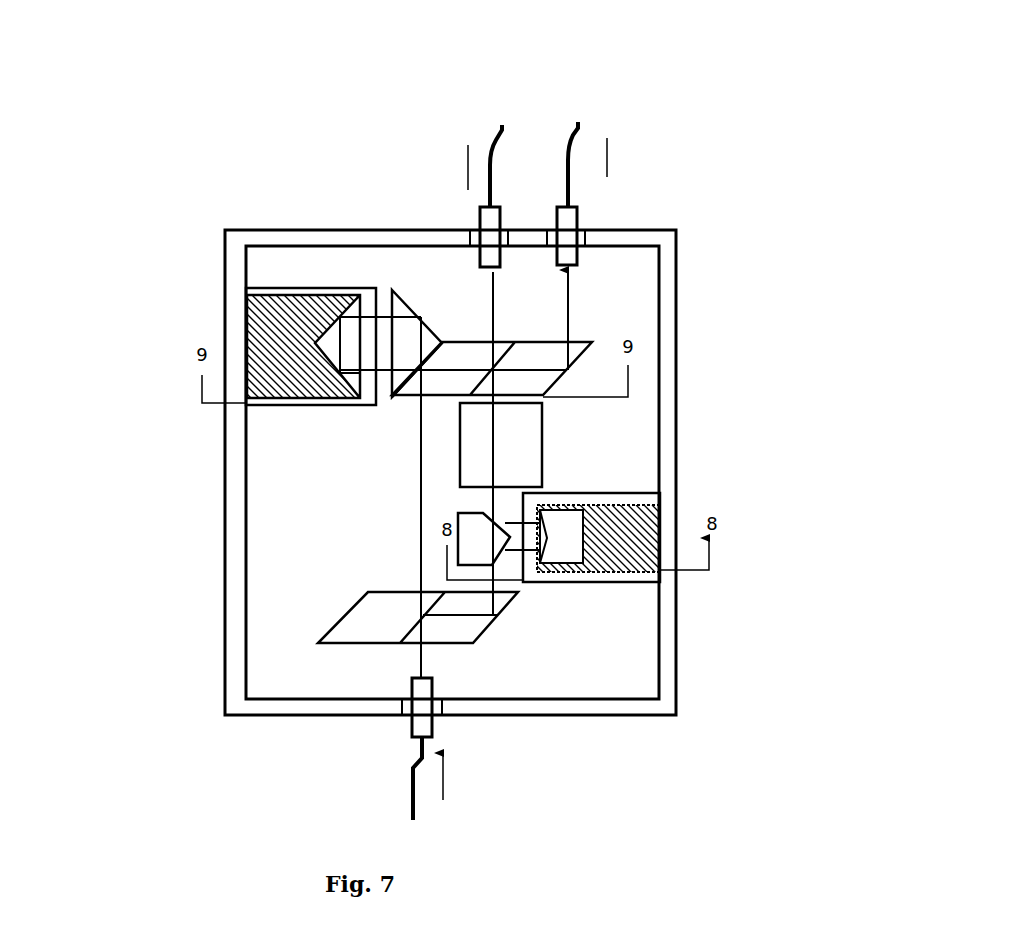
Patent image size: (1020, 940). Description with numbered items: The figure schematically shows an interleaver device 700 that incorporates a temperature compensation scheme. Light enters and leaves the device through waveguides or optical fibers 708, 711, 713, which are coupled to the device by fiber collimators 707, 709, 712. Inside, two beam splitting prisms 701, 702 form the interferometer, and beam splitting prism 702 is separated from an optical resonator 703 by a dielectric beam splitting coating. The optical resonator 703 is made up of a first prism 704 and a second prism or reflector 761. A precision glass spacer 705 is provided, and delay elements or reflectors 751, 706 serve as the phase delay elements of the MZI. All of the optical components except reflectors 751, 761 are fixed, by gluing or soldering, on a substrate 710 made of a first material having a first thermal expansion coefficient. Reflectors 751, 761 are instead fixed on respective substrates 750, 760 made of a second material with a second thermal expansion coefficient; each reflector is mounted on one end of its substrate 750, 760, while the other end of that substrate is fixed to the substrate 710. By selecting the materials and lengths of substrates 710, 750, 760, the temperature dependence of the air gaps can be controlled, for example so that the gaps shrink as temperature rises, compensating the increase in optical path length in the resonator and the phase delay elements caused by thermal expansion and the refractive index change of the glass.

The device 700 is at (258, 121).
The beam splitting prism 701 is at (335, 622).
The beam splitting prism 702 is at (592, 342).
The optical resonator 703 is at (408, 322).
The first prism 704 is at (445, 335).
The precision glass spacer 705 is at (543, 440).
The delay element or reflector 706 is at (470, 512).
The fiber collimator 707 is at (412, 723).
The optical fiber 708 is at (407, 787).
The fiber collimator 709 is at (580, 213).
The substrate 710 is at (638, 285).
The optical fiber 711 is at (568, 150).
The fiber collimator 712 is at (503, 215).
The optical fiber 713 is at (505, 140).
The substrate 750 is at (687, 516).
The delay element or reflector 751 is at (537, 505).
The substrate 760 is at (253, 356).
The second prism or reflector 761 is at (355, 385).